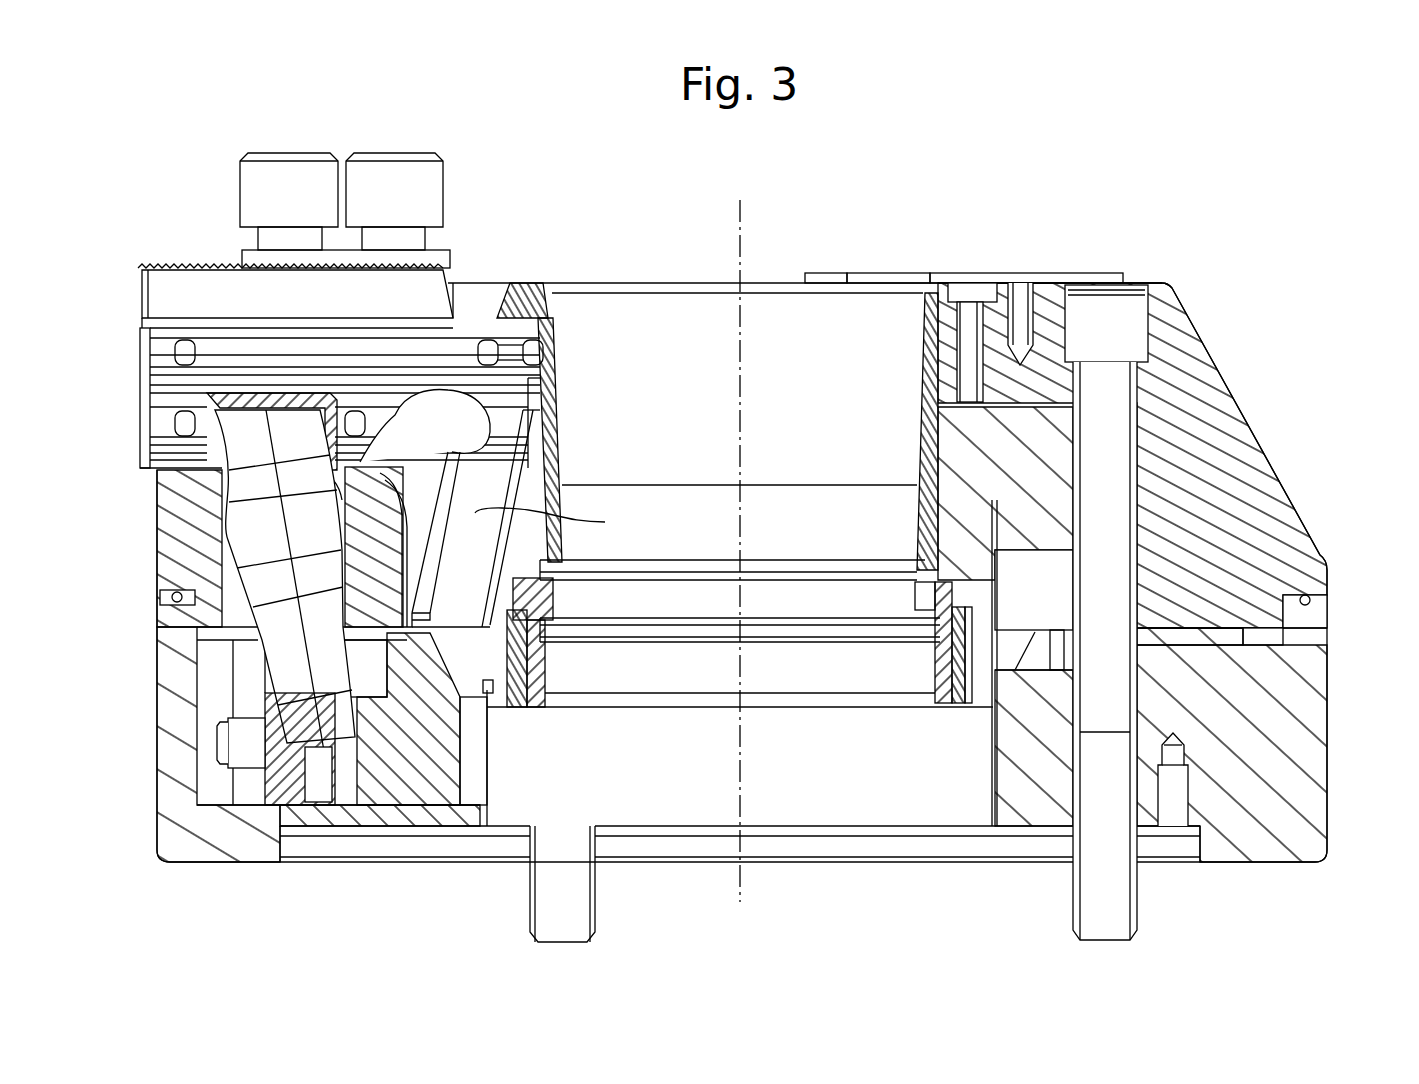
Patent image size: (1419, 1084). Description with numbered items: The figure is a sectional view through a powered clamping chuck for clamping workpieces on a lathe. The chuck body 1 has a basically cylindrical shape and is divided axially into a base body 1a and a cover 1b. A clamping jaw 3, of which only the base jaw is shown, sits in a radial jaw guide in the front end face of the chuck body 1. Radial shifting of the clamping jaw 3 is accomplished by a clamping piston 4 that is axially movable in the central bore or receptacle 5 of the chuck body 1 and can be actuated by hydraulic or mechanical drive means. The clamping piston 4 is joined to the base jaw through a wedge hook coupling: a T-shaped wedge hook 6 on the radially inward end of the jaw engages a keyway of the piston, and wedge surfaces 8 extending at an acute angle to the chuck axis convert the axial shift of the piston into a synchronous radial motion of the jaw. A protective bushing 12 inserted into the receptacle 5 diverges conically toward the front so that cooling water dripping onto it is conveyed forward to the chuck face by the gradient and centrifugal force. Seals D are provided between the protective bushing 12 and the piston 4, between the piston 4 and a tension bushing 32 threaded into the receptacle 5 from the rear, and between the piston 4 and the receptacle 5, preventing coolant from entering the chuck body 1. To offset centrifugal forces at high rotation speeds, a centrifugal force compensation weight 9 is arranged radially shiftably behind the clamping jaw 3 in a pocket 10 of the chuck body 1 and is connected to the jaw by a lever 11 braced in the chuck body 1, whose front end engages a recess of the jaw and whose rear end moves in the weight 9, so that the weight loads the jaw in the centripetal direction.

The chuck body 1 is at (1310, 725).
The base body 1a is at (1232, 745).
The cover 1b is at (1238, 423).
The clamping jaw 3 is at (163, 300).
The clamping piston 4 is at (955, 445).
The receptacle 5 is at (650, 368).
The wedge hook 6 is at (503, 448).
The wedge surface 8 is at (475, 513).
The centrifugal force compensation weight 9 is at (277, 782).
The pocket 10 is at (208, 734).
The lever 11 is at (237, 537).
The protective bushing 12 is at (933, 287).
The tension bushing 32 is at (940, 673).
The seal D is at (550, 547).